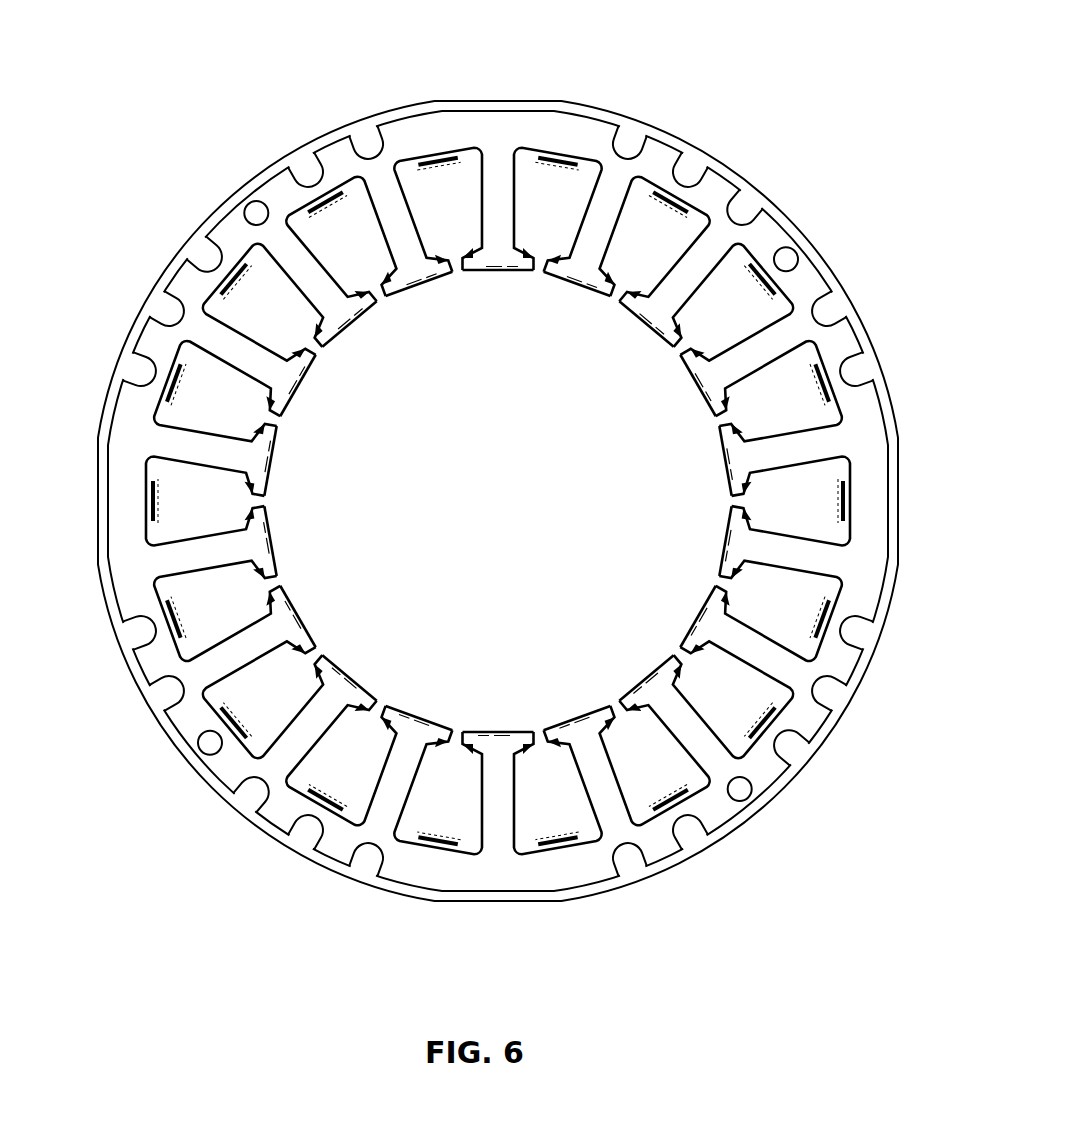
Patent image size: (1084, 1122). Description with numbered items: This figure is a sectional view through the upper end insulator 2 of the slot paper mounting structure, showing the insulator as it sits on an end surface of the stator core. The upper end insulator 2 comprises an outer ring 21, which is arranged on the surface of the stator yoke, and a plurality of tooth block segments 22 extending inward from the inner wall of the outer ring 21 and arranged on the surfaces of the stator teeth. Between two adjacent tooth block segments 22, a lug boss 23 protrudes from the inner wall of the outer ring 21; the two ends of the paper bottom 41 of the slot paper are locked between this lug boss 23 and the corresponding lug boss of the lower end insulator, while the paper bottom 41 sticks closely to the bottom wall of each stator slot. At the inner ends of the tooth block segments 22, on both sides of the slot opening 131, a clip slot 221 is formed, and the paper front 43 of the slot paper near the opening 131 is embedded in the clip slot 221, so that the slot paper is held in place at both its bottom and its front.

The upper end insulator 2 is at (433, 140).
The outer ring 21 is at (525, 145).
The tooth block segments 22 is at (605, 215).
The clip slot 221 is at (627, 305).
The lug boss 23 is at (775, 283).
The paper bottom 41 is at (755, 255).
The paper front 43 is at (607, 288).
The opening 131 is at (540, 272).